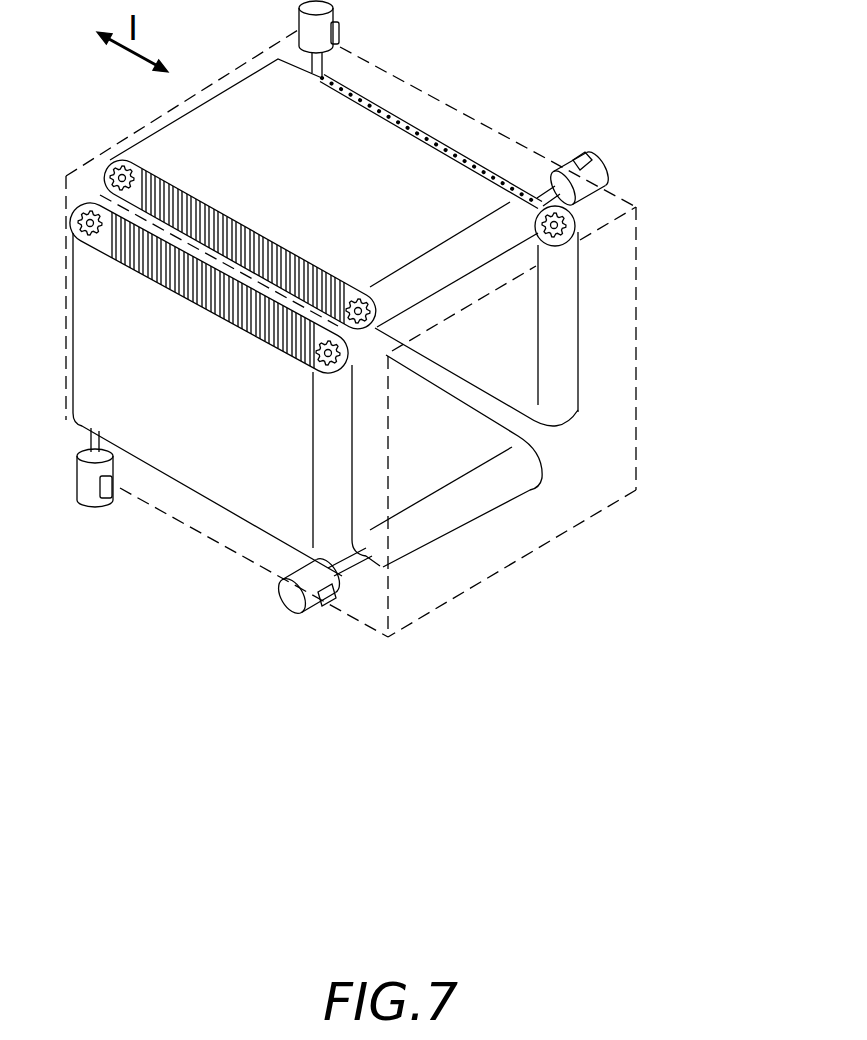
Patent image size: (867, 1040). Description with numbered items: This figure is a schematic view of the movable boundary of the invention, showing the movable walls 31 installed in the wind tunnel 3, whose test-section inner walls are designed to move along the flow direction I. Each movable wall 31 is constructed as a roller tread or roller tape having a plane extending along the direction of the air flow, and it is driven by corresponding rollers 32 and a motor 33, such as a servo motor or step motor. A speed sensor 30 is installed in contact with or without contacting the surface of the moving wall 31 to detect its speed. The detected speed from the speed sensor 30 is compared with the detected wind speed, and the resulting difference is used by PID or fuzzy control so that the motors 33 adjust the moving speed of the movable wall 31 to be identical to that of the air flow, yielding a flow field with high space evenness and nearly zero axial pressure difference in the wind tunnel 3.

The wind tunnel 3 is at (440, 97).
The speed sensor 30 is at (357, 83).
The movable wall 31 is at (443, 173).
The roller 32 is at (107, 160).
The motor 33 is at (588, 158).